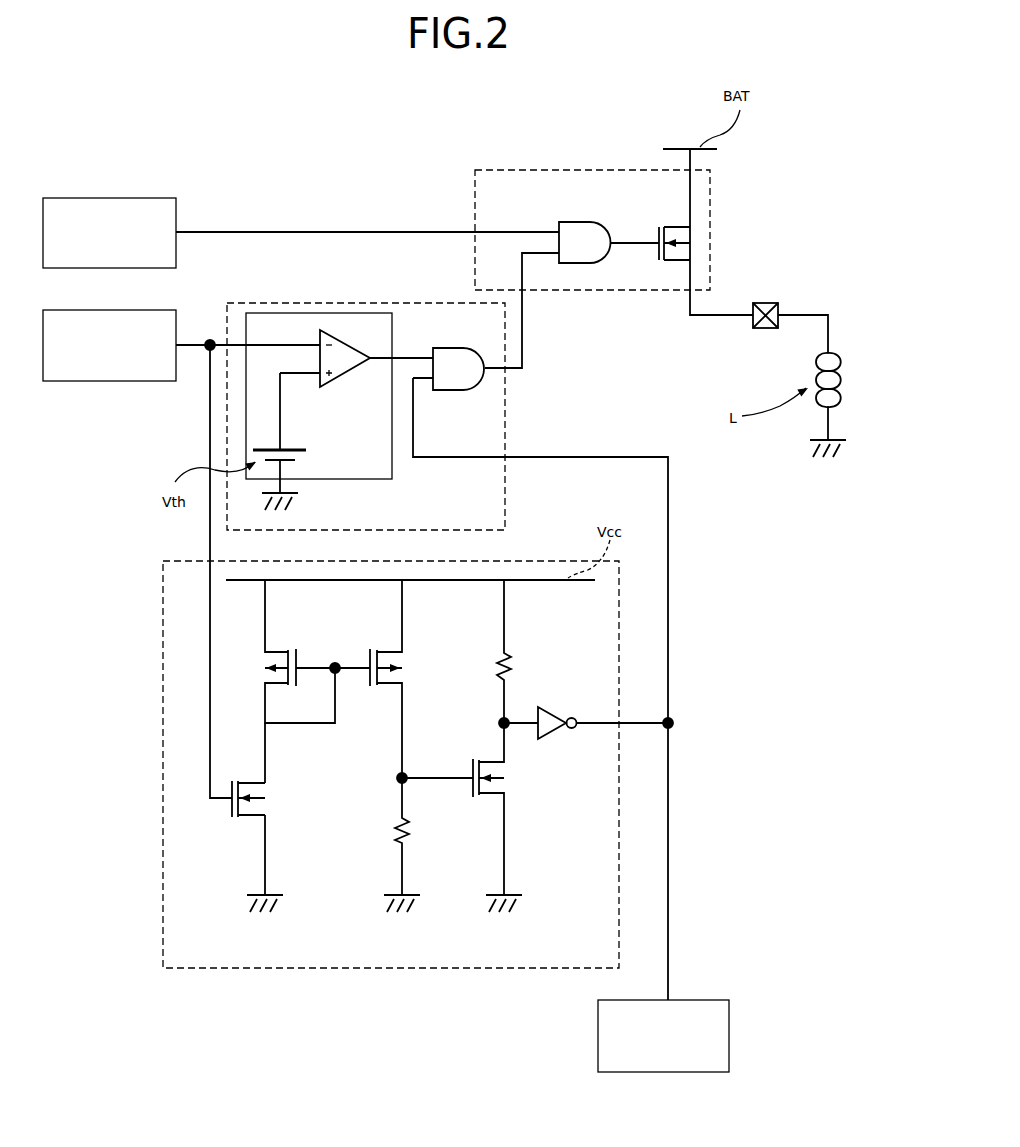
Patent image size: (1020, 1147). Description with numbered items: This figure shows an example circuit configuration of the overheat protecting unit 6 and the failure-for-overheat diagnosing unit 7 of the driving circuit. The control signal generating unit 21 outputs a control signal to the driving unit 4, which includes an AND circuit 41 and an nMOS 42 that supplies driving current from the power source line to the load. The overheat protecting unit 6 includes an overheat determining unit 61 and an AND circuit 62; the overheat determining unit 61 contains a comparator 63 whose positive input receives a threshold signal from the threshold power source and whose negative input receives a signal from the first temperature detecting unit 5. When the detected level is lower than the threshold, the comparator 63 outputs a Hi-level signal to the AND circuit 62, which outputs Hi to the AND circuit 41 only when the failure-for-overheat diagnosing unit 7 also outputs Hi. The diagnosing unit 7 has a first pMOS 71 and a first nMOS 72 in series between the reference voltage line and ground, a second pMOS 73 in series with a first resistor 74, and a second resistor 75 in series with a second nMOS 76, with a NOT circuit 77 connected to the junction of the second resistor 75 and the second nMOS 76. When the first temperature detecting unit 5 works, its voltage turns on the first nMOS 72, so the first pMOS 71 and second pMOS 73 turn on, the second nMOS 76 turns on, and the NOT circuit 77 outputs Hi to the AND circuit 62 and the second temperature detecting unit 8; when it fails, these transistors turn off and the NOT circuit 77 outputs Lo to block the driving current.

The control signal generating unit 21 is at (135, 196).
The first temperature detecting unit 5 is at (135, 307).
The driving unit 4 is at (475, 185).
The AND circuit 41 is at (573, 264).
The N-channel MOS field effect transistor 42 is at (700, 233).
The overheat protecting unit 6 is at (508, 505).
The overheat determining unit 61 is at (261, 312).
The AND circuit 62 is at (483, 385).
The comparator 63 is at (346, 343).
The failure-for-overheat diagnosing unit 7 is at (163, 748).
The first P-channel MOS field effect transistor 71 is at (306, 643).
The first nMOS 72 is at (280, 790).
The second pMOS 73 is at (420, 656).
The first resistor 74 is at (418, 830).
The second resistor 75 is at (528, 656).
The second nMOS 76 is at (520, 788).
The NOT circuit 77 is at (558, 712).
The second temperature detecting unit 8 is at (690, 990).